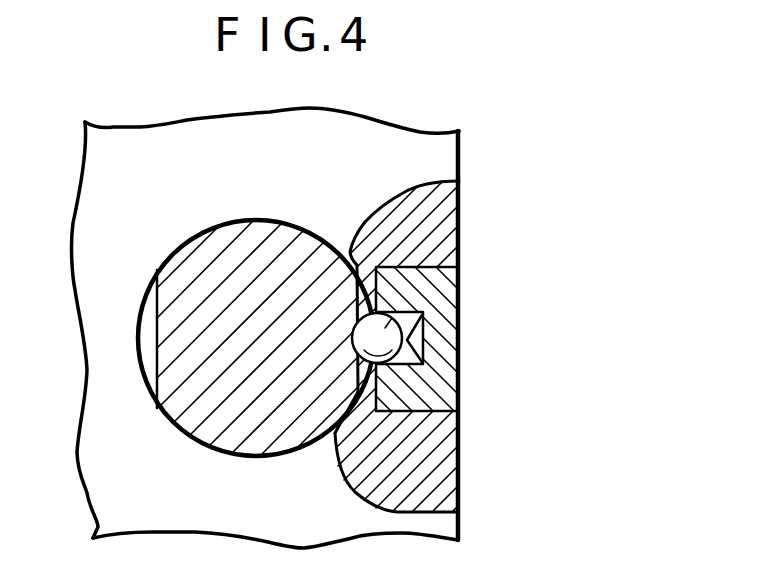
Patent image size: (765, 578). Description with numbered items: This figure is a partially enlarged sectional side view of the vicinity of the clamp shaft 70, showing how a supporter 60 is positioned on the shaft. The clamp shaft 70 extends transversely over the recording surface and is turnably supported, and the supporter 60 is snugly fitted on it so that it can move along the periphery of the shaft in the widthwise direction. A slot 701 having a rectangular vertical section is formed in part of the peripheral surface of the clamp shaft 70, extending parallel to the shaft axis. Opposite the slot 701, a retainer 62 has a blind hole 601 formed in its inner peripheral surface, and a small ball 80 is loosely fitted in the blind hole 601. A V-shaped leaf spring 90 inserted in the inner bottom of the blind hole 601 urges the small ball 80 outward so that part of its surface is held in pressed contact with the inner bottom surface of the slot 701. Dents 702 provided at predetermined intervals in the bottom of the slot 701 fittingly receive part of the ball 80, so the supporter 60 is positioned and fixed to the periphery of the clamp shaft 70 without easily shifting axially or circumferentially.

The supporter 60 is at (436, 152).
The clamp shaft 70 is at (226, 248).
The small ball 80 is at (390, 307).
The retainer 62 is at (460, 293).
The V-shaped leaf spring 90 is at (396, 373).
The slot 701 is at (346, 312).
The dent 702 is at (347, 338).
The blind hole 601 is at (334, 437).